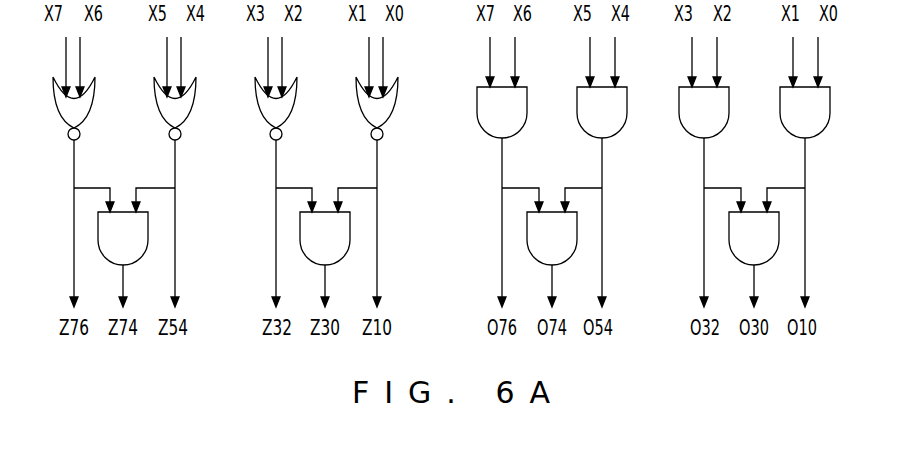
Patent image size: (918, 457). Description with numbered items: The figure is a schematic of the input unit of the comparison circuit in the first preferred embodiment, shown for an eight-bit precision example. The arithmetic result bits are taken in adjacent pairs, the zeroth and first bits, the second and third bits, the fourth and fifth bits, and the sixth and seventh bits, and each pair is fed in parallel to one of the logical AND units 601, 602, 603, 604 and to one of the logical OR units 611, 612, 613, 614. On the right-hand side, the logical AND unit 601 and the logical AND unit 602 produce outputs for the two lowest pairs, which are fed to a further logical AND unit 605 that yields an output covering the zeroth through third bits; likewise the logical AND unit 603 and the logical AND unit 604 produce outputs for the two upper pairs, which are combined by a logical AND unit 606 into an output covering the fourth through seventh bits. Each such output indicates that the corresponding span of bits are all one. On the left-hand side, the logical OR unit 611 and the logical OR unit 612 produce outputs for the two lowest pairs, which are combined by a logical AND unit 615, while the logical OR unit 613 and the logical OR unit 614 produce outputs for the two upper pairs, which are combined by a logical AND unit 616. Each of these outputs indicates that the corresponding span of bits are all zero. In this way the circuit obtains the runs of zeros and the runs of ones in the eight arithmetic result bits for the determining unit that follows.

The logical AND unit 601 is at (830, 112).
The logical AND unit 602 is at (729, 112).
The logical AND unit 603 is at (627, 112).
The logical AND unit 604 is at (527, 112).
The logical AND unit 605 is at (775, 252).
The logical AND unit 606 is at (573, 252).
The logical OR unit 611 is at (395, 110).
The logical OR unit 612 is at (294, 110).
The logical OR unit 613 is at (193, 110).
The logical OR unit 614 is at (92, 110).
The logical AND unit 615 is at (346, 252).
The logical AND unit 616 is at (144, 252).